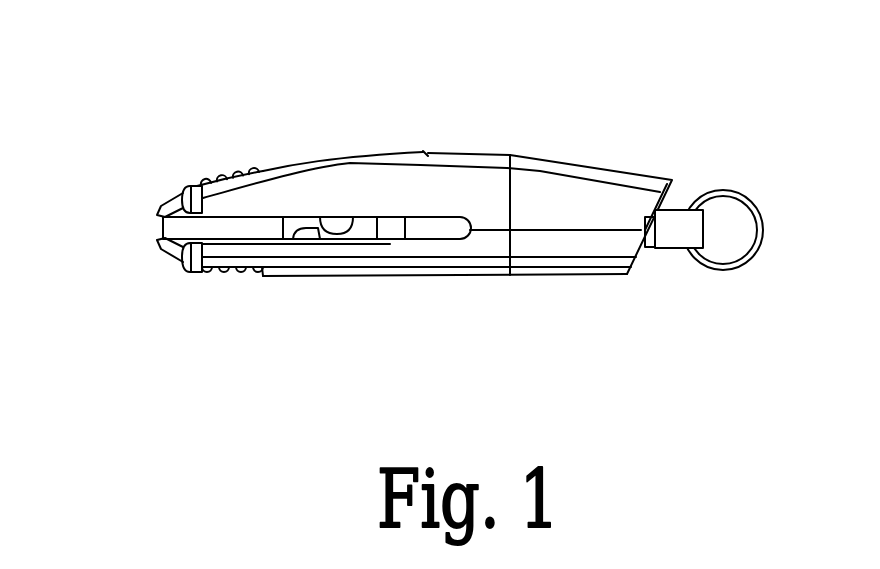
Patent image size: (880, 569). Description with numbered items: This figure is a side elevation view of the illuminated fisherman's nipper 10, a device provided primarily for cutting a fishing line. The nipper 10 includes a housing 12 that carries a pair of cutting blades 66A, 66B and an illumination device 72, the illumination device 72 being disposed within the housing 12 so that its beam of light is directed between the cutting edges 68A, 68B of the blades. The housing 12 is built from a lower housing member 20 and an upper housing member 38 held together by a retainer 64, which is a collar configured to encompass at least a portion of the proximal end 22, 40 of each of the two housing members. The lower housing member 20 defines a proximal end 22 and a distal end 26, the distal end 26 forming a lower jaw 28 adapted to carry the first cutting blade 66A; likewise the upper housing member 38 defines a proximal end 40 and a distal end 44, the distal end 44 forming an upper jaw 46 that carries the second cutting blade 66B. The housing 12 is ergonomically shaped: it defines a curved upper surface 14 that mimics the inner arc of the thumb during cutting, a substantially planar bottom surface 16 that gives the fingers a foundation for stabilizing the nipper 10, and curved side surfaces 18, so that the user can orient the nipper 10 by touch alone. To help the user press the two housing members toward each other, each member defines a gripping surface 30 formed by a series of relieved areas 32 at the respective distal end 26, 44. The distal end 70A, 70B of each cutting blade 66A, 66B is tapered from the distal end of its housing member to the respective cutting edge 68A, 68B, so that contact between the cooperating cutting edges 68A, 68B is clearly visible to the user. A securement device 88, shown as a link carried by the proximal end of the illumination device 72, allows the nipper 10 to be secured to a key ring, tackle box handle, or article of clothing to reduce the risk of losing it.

The nipper 10 is at (242, 55).
The housing 12 is at (456, 152).
The curved upper surface 14 is at (393, 148).
The bottom surface 16 is at (473, 278).
The side surface 18 is at (540, 210).
The lower housing member 20 is at (358, 252).
The proximal end 22 is at (495, 277).
The distal end 26 is at (208, 276).
The lower jaw 28 is at (320, 242).
The gripping surface 30 is at (228, 172).
The relieved areas 32 is at (228, 273).
The upper housing member 38 is at (297, 190).
The proximal end 40 is at (495, 152).
The distal end 44 is at (188, 186).
The upper jaw 46 is at (353, 216).
The retainer 64 is at (603, 280).
The first cutting blade 66A is at (178, 268).
The second cutting blade 66B is at (172, 192).
The cutting edge 68A is at (167, 246).
The cutting edge 68B is at (160, 214).
The distal end 70A is at (172, 252).
The distal end 70B is at (165, 207).
The illumination device 72 is at (396, 238).
The securement device 88 is at (757, 193).